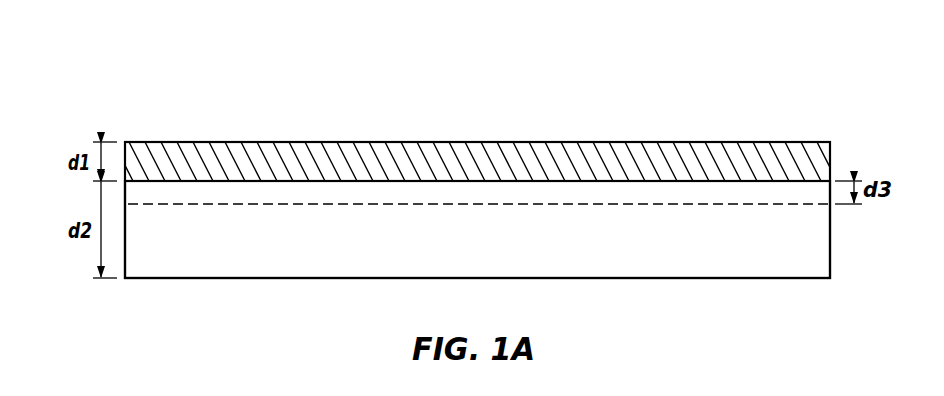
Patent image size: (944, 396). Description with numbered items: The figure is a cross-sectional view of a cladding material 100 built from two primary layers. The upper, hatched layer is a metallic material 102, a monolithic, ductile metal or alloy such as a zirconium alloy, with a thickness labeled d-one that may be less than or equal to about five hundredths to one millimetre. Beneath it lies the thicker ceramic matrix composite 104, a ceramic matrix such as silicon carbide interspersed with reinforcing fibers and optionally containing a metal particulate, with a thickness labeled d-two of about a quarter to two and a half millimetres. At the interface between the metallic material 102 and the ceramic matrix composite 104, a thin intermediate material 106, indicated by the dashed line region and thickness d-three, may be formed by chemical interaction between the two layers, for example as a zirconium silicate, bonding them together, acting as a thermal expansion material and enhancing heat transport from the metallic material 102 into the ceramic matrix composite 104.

The cladding material 100 is at (130, 93).
The metallic material 102 is at (388, 157).
The ceramic matrix composite 104 is at (617, 230).
The intermediate material 106 is at (492, 195).